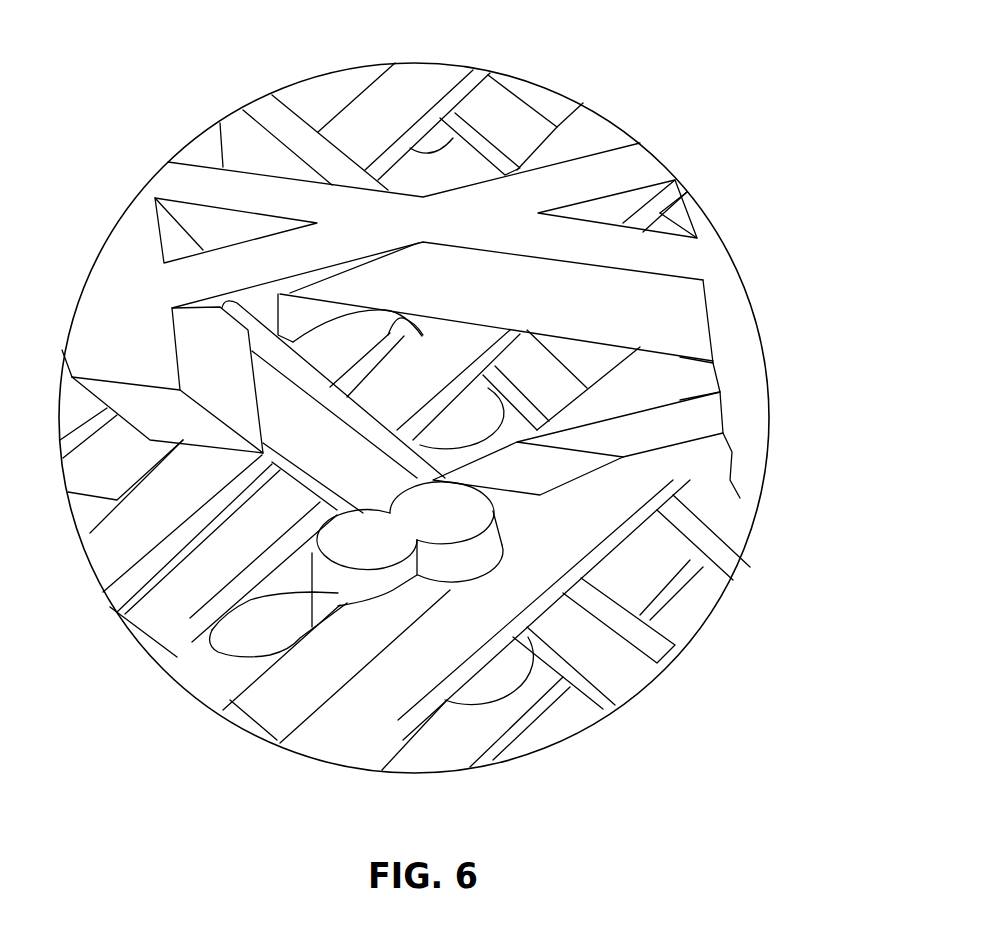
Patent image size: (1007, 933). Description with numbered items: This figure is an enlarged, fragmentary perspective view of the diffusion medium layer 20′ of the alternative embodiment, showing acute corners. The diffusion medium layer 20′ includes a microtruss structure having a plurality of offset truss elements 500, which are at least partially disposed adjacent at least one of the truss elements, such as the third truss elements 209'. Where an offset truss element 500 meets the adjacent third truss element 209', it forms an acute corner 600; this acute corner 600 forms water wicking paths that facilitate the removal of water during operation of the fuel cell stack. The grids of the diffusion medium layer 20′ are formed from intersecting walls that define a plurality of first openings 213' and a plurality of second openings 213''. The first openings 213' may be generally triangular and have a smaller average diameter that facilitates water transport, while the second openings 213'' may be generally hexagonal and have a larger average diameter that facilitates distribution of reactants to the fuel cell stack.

The diffusion medium layer 20′ is at (700, 80).
The first openings 213' is at (197, 185).
The second openings 213'' is at (439, 346).
The third truss elements 209' is at (558, 554).
The acute corner 600 is at (428, 558).
The offset truss elements 500 is at (233, 654).